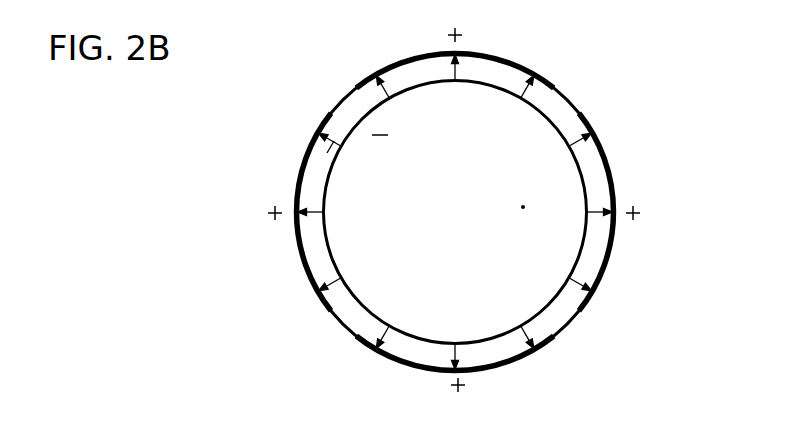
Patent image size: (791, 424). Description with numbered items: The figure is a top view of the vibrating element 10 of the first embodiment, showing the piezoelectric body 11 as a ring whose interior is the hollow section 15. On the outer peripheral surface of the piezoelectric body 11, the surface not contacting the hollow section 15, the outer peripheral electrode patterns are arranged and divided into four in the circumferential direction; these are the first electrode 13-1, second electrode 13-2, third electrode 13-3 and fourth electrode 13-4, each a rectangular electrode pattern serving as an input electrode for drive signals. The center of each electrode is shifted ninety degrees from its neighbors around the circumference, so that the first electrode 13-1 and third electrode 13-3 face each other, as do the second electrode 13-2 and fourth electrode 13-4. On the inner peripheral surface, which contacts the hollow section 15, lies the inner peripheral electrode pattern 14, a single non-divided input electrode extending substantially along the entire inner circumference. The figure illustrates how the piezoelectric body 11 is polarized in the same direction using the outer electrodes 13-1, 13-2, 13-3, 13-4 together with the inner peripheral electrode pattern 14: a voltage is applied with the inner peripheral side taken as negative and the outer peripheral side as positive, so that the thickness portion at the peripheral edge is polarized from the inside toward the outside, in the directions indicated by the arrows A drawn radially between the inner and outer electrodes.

The vibrating element 10 is at (690, 47).
The piezoelectric body 11 is at (352, 105).
The first electrode 13-1 is at (508, 363).
The second electrode 13-2 is at (614, 201).
The third electrode 13-3 is at (541, 43).
The fourth electrode 13-4 is at (303, 265).
The inner peripheral electrode pattern 14 is at (533, 342).
The hollow section 15 is at (523, 207).
The arrows A is at (327, 153).